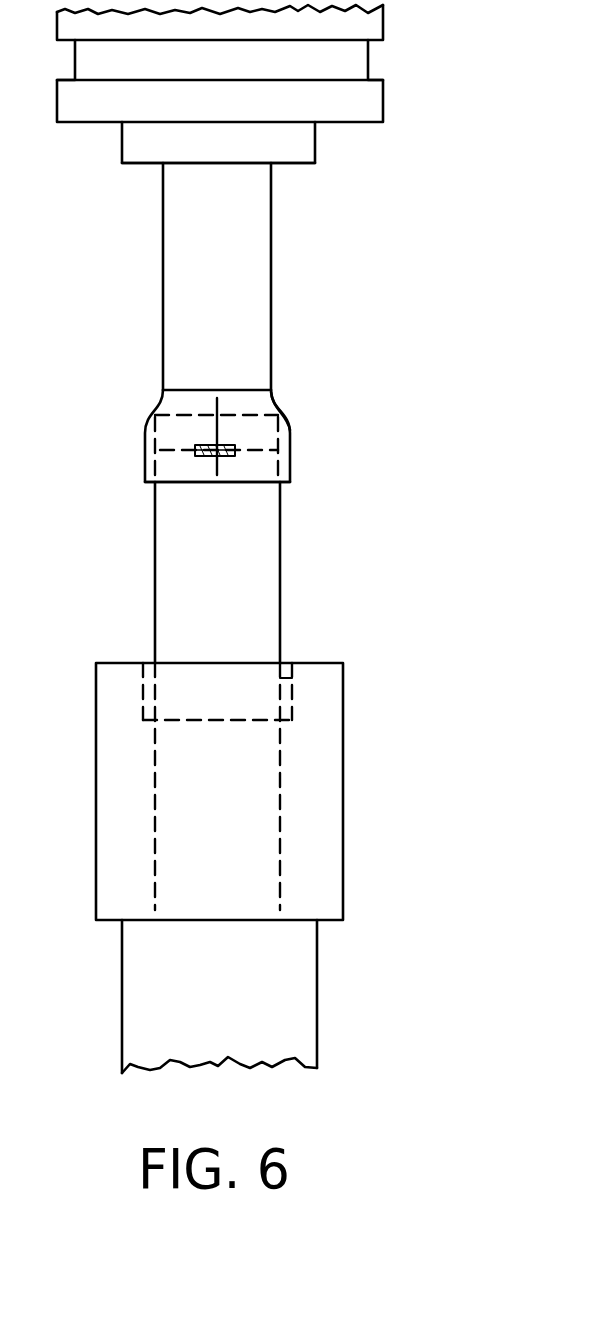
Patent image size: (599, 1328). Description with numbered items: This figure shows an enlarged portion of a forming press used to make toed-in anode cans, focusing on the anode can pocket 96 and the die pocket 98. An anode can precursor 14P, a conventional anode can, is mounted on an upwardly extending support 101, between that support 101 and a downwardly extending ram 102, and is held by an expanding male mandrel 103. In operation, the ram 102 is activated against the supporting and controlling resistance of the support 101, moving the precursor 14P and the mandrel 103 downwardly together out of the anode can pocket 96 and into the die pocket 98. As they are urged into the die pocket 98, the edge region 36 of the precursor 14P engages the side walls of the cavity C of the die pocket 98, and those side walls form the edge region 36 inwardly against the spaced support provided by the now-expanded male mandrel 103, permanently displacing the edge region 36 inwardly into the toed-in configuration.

The ram 102 is at (257, 288).
The anode can pocket 96 is at (298, 442).
The anode can precursor 14P is at (287, 415).
The expanding male mandrel 103 is at (148, 432).
The edge region 36 is at (291, 481).
The support 101 is at (280, 582).
The cavity C is at (289, 672).
The die pocket 98 is at (342, 687).